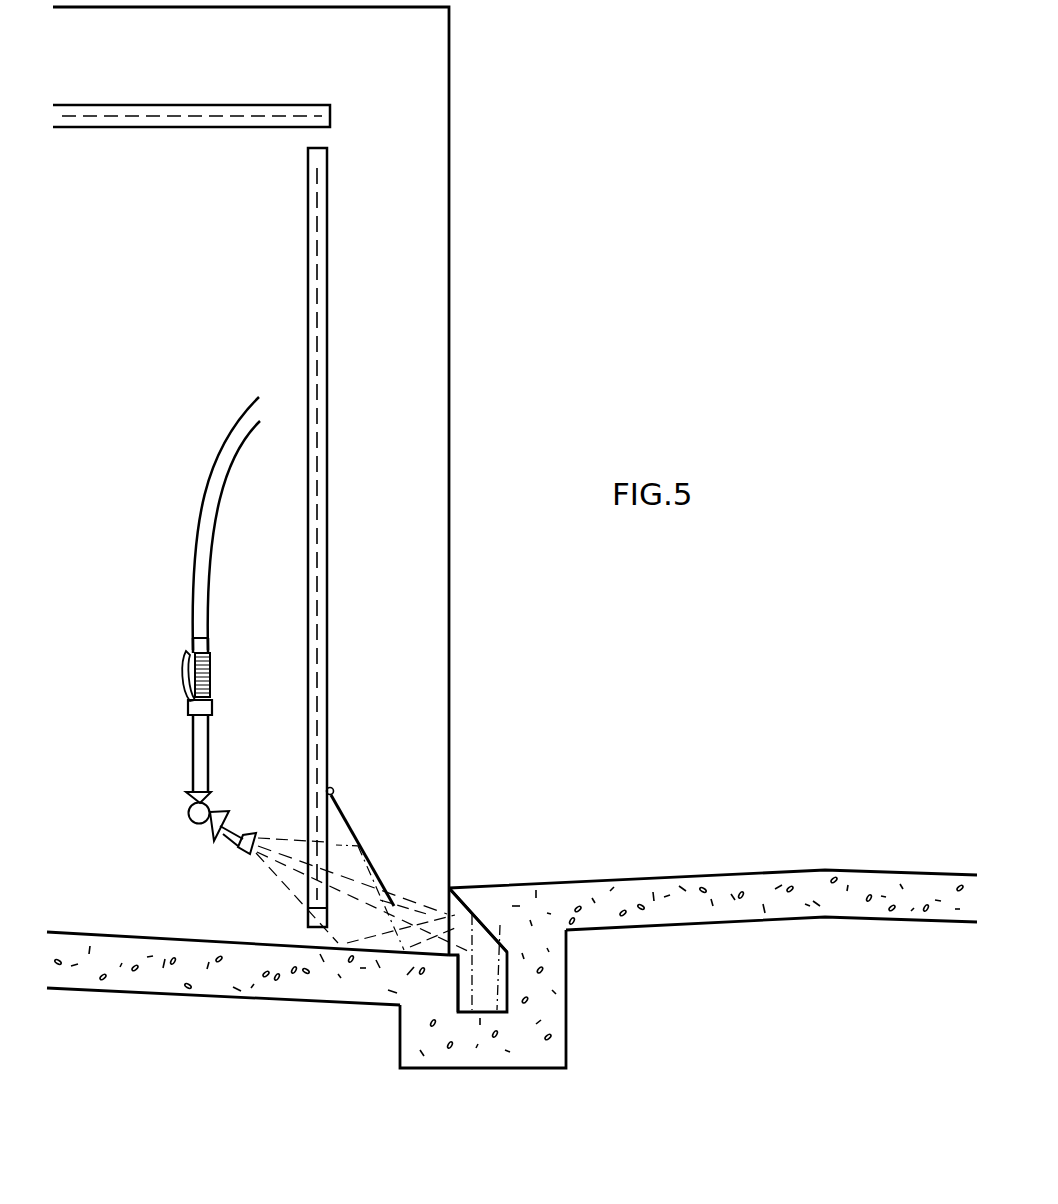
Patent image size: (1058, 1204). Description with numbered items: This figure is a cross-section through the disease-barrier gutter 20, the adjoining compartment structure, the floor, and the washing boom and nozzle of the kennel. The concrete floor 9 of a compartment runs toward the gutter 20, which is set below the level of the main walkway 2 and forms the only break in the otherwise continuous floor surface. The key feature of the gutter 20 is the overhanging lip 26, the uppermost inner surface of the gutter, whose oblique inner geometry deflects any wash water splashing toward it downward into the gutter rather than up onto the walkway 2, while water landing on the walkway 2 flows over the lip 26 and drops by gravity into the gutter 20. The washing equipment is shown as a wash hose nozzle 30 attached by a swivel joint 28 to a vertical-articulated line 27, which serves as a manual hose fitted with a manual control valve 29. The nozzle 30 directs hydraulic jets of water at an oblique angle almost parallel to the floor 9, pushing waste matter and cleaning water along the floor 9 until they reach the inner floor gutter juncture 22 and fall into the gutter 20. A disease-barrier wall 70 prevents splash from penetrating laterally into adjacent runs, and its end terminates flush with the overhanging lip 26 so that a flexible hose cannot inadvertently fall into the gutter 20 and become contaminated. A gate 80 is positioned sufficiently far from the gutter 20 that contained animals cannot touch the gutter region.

The main walkway 2 is at (773, 874).
The floor 9 is at (205, 939).
The disease-barrier gutter 20 is at (471, 1013).
The inner floor gutter juncture 22 is at (456, 958).
The overhanging lip 26 is at (463, 910).
The vertical-articulated line 27 is at (199, 551).
The swivel joint 28 is at (187, 810).
The manual control valve 29 is at (180, 672).
The wash hose nozzle 30 is at (238, 844).
The disease-barrier wall 70 is at (133, 303).
The gate 80 is at (329, 350).